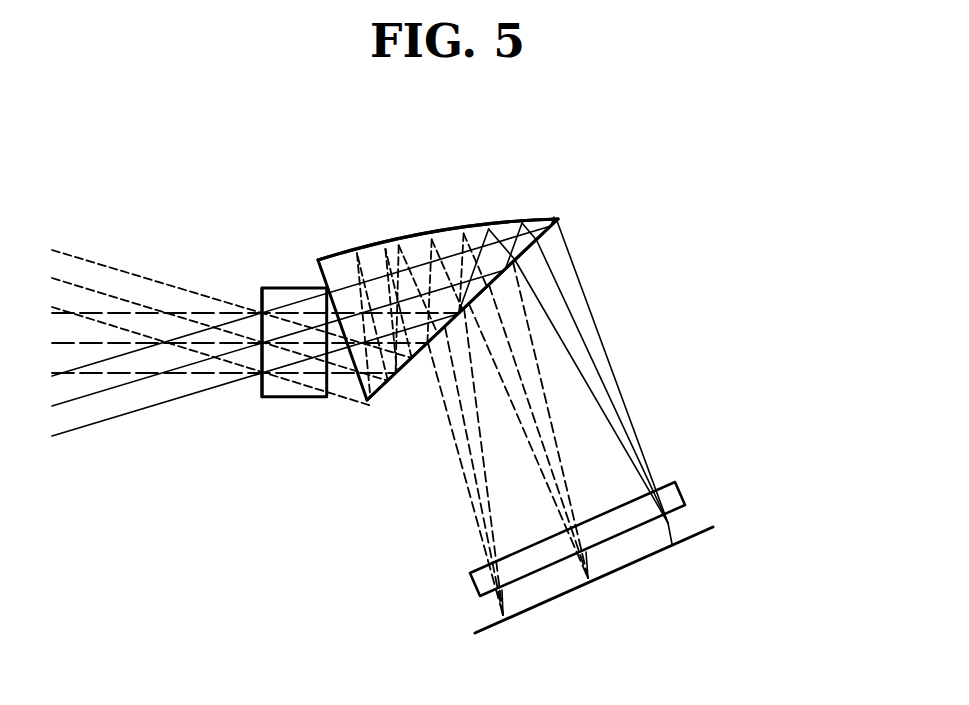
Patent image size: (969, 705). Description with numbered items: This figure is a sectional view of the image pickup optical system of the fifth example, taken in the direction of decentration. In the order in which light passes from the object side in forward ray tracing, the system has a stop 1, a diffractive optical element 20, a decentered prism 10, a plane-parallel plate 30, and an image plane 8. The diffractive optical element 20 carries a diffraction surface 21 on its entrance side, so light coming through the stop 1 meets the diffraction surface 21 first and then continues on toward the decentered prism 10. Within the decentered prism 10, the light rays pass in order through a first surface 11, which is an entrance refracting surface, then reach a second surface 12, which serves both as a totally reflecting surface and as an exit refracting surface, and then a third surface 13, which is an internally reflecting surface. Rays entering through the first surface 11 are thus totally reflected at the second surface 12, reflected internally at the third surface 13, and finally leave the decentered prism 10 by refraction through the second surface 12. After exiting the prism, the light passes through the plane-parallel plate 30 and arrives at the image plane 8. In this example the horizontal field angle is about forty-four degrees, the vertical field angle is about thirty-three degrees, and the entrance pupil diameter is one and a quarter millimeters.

The stop 1 is at (252, 327).
The image plane 8 is at (638, 560).
The decentered prism 10 is at (533, 220).
The first surface 11 is at (357, 387).
The second surface 12 is at (520, 253).
The third surface 13 is at (462, 220).
The diffractive optical element 20 is at (290, 398).
The diffraction surface 21 is at (255, 387).
The plane-parallel plate 30 is at (670, 493).